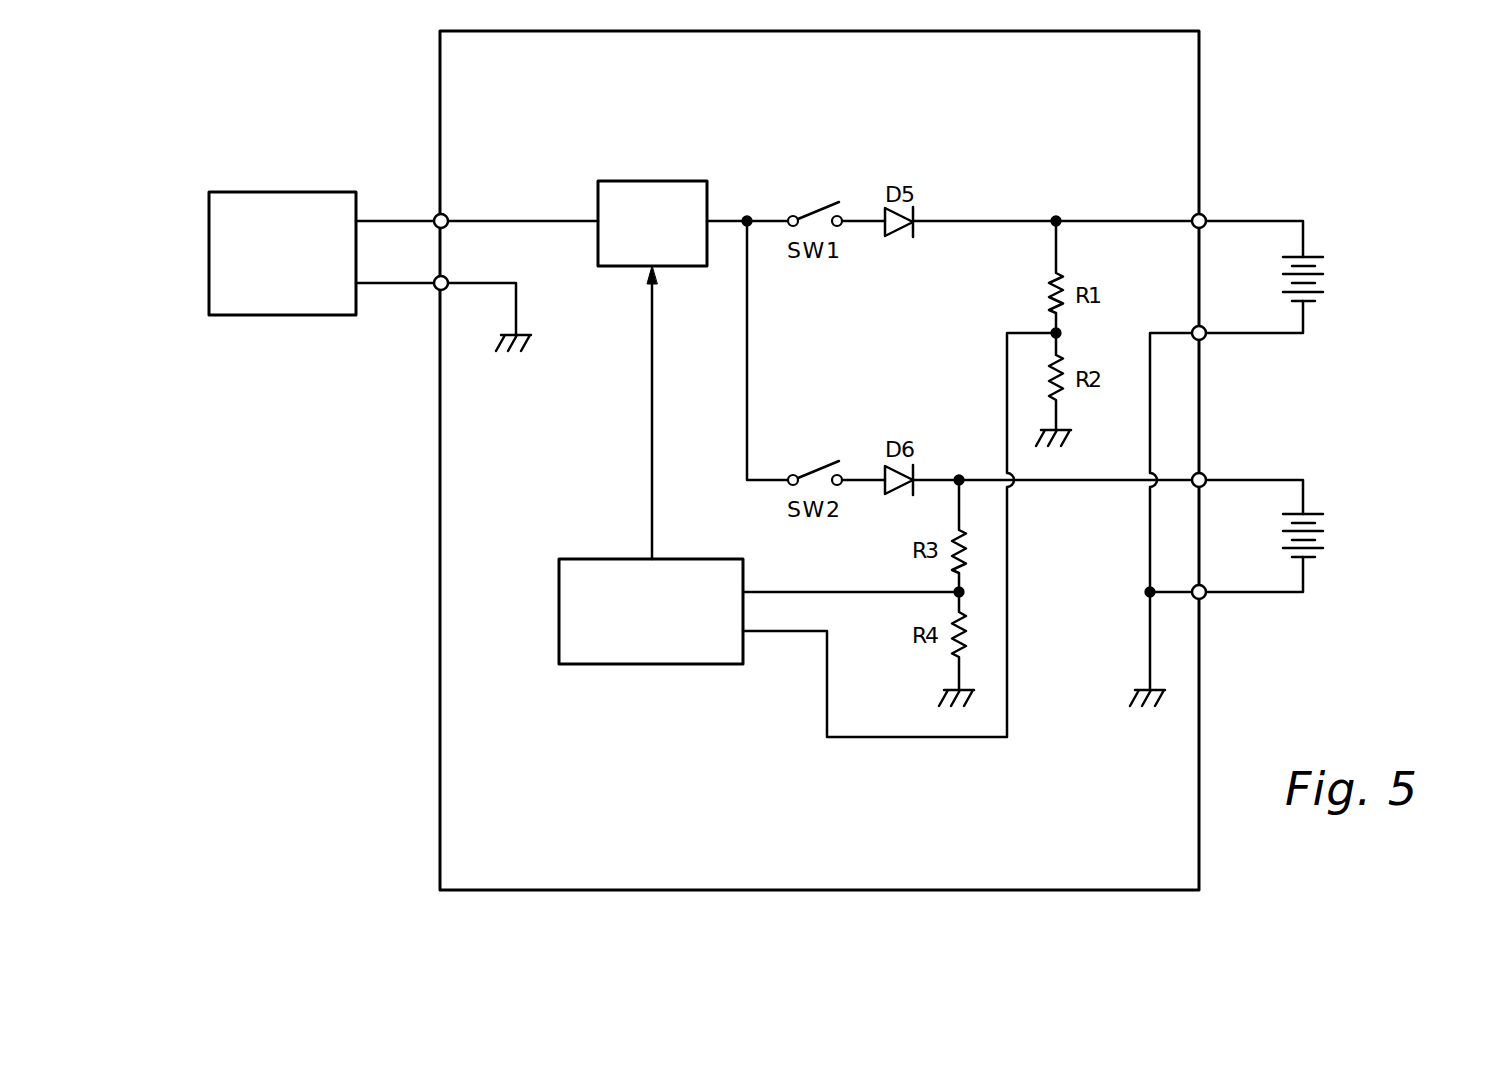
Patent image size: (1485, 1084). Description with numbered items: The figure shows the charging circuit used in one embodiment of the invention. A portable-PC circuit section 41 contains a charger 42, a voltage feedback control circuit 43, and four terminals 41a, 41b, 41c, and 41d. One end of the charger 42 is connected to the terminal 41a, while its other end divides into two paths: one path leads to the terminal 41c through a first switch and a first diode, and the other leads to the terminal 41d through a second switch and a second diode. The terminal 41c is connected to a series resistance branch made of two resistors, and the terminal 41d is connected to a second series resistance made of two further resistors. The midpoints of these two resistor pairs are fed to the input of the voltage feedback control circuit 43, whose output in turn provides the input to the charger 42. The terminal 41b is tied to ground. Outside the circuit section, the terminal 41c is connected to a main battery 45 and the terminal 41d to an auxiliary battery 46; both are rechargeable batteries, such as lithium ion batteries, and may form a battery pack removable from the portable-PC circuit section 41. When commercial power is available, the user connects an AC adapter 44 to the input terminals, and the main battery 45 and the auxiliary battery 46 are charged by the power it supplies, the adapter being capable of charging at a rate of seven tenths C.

The portable-PC circuit section 41 is at (836, 873).
The terminal 41a is at (448, 220).
The terminal 41b is at (448, 282).
The terminal 41c is at (1206, 220).
The terminal 41d is at (1206, 479).
The charger 42 is at (638, 146).
The voltage feedback control circuit 43 is at (596, 524).
The AC adapter 44 is at (250, 155).
The main battery 45 is at (1278, 288).
The auxiliary battery 46 is at (1278, 543).